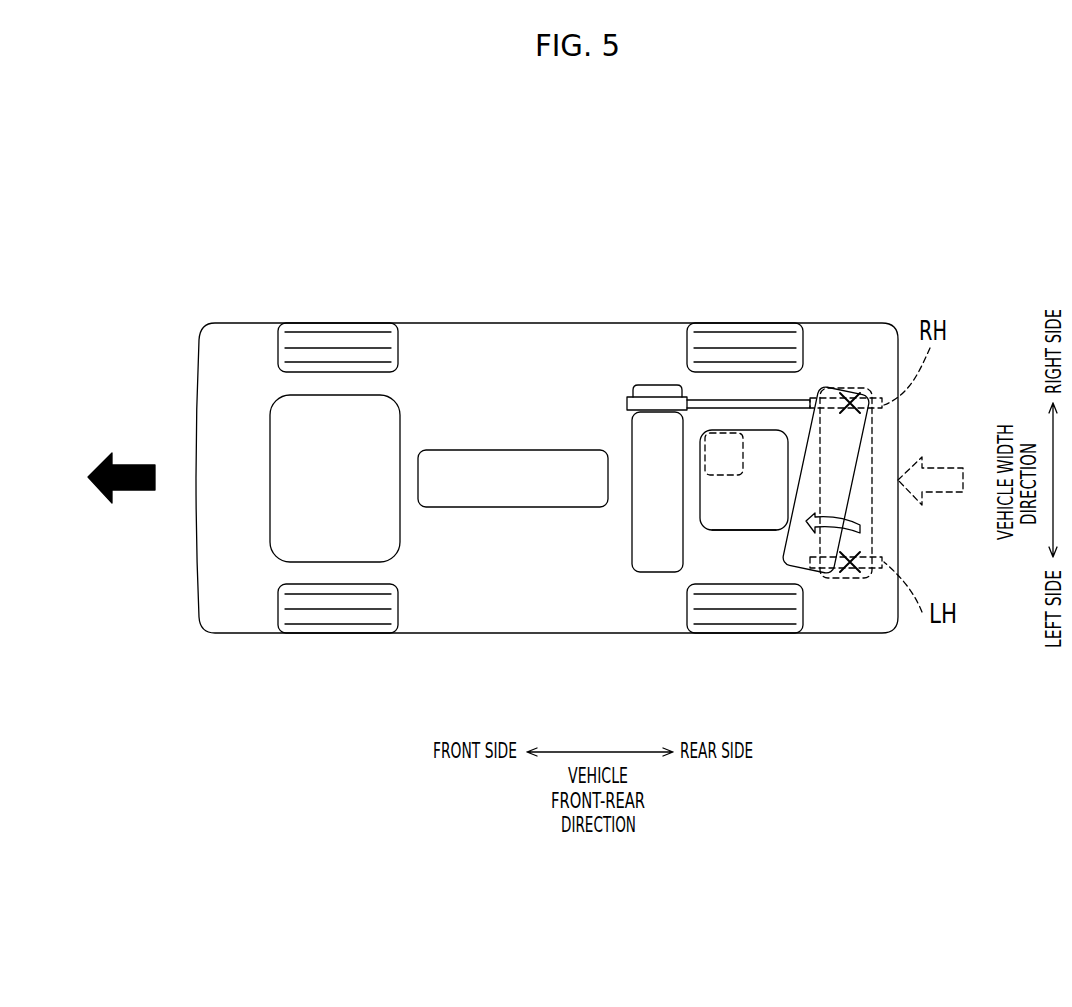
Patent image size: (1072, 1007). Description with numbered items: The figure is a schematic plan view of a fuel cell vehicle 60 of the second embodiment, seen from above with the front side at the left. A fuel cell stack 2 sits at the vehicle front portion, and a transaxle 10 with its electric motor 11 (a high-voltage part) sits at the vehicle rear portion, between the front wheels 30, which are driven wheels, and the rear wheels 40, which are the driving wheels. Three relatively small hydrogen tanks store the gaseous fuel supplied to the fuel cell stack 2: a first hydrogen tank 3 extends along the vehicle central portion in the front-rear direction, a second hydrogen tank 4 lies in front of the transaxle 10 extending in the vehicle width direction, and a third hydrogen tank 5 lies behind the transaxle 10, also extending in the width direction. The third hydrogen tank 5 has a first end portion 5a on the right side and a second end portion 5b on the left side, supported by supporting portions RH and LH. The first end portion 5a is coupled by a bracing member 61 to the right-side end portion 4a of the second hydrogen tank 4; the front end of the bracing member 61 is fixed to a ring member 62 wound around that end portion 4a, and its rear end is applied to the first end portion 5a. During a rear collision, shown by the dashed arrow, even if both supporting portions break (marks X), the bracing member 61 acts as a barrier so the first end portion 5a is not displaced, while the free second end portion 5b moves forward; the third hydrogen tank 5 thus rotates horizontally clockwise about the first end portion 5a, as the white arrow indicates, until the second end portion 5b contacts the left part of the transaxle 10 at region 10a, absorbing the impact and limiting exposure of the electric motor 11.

The fuel cell stack 2 is at (282, 432).
The first hydrogen tank 3 is at (470, 492).
The second hydrogen tank 4 is at (643, 545).
The end portion 4a is at (658, 387).
The third hydrogen tank 5 is at (845, 443).
The first end portion 5a is at (848, 390).
The second end portion 5b is at (800, 568).
The transaxle 10 is at (707, 502).
The control unit bottom 10a is at (727, 530).
The electric motor 11 is at (725, 433).
The front wheels 30 is at (337, 618).
The rear wheels 40 is at (743, 633).
The fuel cell vehicle 60 is at (490, 323).
The bracing member 61 is at (777, 400).
The ring member 62 is at (627, 400).